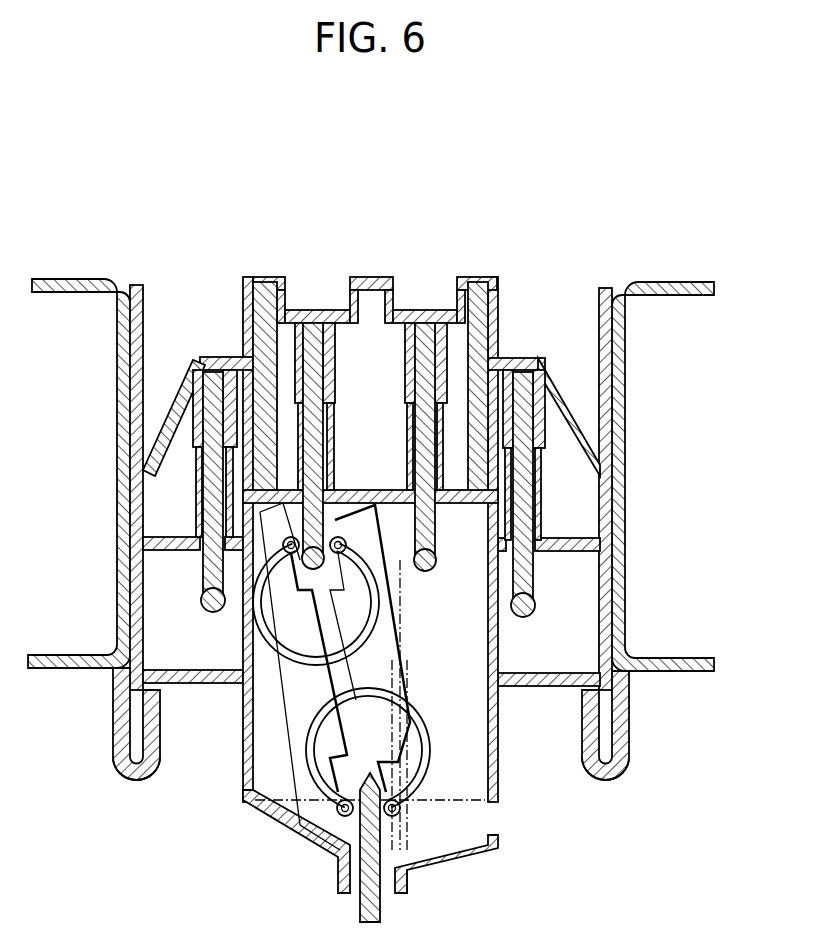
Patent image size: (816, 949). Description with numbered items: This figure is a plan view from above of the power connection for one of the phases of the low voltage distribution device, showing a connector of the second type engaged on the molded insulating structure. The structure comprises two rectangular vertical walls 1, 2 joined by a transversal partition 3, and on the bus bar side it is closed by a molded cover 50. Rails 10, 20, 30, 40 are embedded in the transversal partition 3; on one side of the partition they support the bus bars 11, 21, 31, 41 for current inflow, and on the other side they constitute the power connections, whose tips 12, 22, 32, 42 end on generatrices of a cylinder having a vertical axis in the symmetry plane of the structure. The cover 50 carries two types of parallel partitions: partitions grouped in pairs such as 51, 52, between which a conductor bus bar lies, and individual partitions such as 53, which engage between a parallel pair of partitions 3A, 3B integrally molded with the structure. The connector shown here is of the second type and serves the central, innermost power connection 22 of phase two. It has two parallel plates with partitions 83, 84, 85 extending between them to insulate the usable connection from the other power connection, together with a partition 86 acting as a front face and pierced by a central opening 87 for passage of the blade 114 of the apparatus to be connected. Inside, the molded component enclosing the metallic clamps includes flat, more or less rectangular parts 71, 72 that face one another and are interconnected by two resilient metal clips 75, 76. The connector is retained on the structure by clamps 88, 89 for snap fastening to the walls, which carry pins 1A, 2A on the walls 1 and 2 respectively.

The rectangular vertical wall 1 is at (135, 497).
The pin of wall 1 1A is at (105, 742).
The rectangular vertical wall 2 is at (617, 506).
The pin of wall 2 2A is at (632, 747).
The transversal partition 3 is at (537, 493).
The parallel partition 3A is at (233, 442).
The parallel partition 3B is at (210, 475).
The rail 10 is at (147, 445).
The bus bar 11 is at (213, 368).
The tip of power connection 12 is at (207, 598).
The rail 20 is at (365, 429).
The bus bar 21 is at (316, 323).
The tip of power connection 22 is at (328, 580).
The rail 30 is at (447, 416).
The bus bar 31 is at (423, 323).
The tip of power connection 32 is at (433, 585).
The rail 40 is at (547, 463).
The bus bar 41 is at (524, 372).
The tip of power connection 42 is at (536, 605).
The molded cover 50 is at (391, 590).
The cover partition 51 is at (180, 410).
The cover partition 52 is at (247, 355).
The individual cover partition 53 is at (270, 295).
The flat rectangular part 71 is at (275, 720).
The flat rectangular part 72 is at (400, 665).
The resilient metal clip 75 is at (368, 642).
The resilient metal clip 76 is at (410, 735).
The partition 83 is at (243, 617).
The partition 84 is at (395, 620).
The partition 85 is at (500, 637).
The front face partition 86 is at (504, 812).
The central opening 87 is at (393, 897).
The snap fastening clamp 88 is at (113, 762).
The snap fastening clamp 89 is at (633, 765).
The blade 114 is at (363, 895).